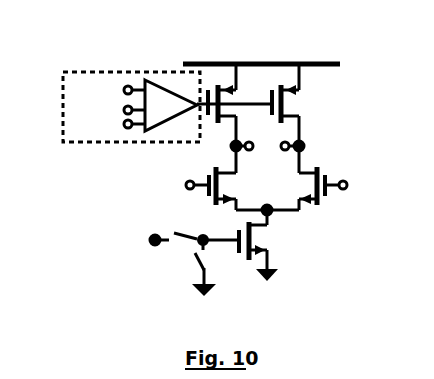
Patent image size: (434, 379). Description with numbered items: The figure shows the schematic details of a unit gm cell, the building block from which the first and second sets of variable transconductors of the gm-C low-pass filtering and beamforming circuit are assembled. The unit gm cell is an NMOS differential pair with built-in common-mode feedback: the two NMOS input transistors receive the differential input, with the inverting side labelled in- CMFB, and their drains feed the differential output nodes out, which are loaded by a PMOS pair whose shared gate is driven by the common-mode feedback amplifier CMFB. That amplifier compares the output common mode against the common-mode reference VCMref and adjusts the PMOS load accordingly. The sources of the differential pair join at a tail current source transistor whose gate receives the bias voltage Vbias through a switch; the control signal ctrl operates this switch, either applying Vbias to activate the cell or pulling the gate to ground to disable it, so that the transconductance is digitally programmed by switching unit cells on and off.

The common-mode feedback amplifier CMFB is at (131, 96).
The common-mode reference voltage input VCMref is at (106, 89).
The differential output nodes out is at (267, 150).
The inverting input transistor in- is at (325, 186).
The bias voltage input Vbias is at (134, 230).
The control switch ctrl is at (183, 245).